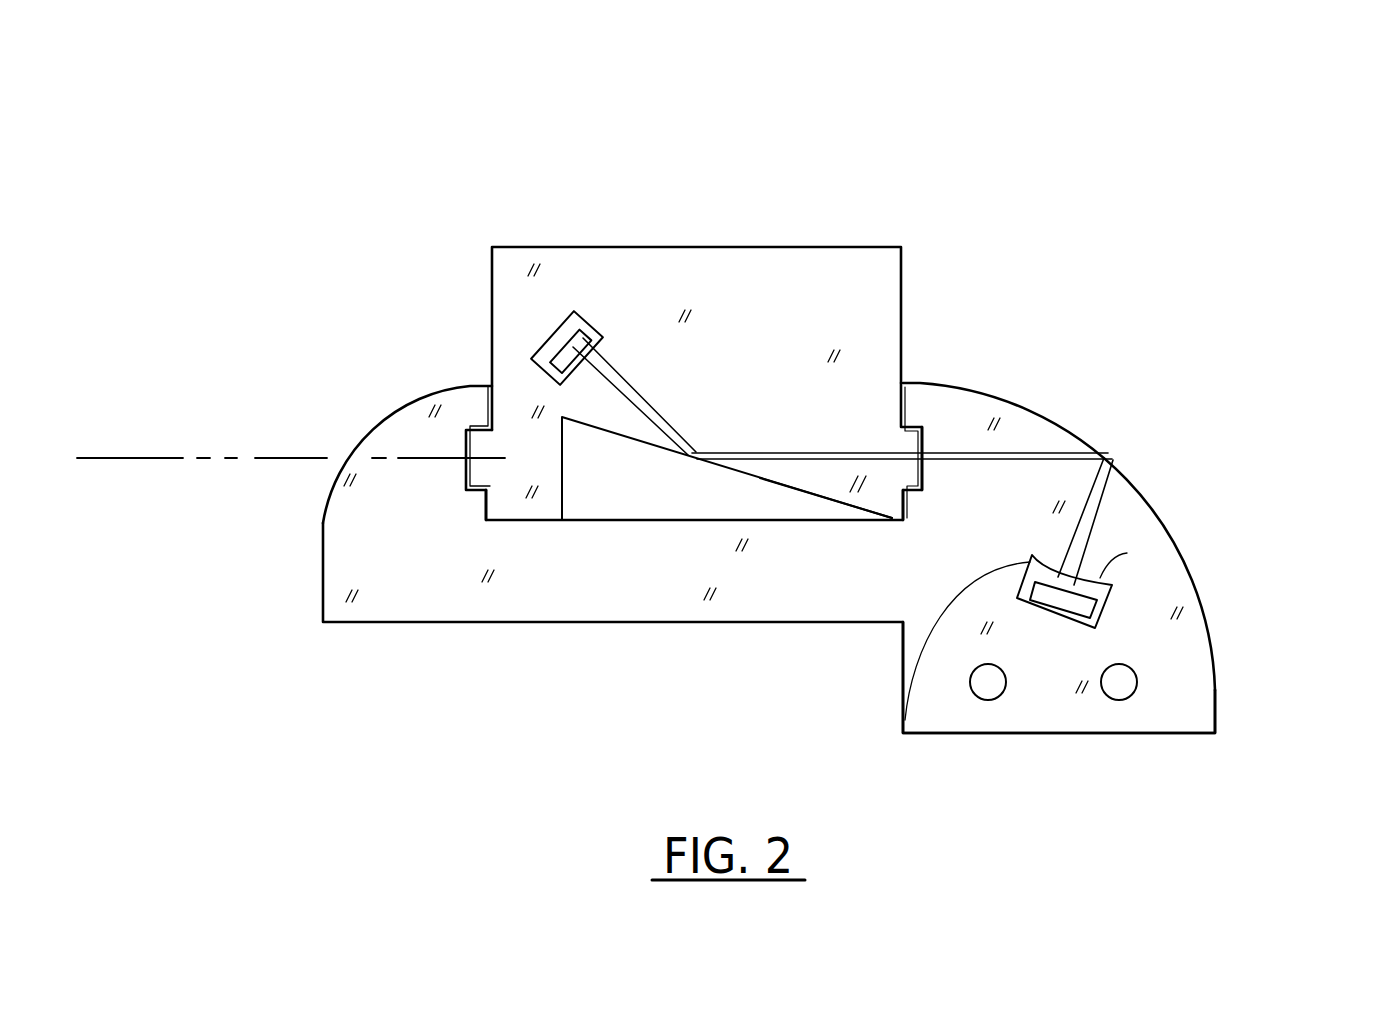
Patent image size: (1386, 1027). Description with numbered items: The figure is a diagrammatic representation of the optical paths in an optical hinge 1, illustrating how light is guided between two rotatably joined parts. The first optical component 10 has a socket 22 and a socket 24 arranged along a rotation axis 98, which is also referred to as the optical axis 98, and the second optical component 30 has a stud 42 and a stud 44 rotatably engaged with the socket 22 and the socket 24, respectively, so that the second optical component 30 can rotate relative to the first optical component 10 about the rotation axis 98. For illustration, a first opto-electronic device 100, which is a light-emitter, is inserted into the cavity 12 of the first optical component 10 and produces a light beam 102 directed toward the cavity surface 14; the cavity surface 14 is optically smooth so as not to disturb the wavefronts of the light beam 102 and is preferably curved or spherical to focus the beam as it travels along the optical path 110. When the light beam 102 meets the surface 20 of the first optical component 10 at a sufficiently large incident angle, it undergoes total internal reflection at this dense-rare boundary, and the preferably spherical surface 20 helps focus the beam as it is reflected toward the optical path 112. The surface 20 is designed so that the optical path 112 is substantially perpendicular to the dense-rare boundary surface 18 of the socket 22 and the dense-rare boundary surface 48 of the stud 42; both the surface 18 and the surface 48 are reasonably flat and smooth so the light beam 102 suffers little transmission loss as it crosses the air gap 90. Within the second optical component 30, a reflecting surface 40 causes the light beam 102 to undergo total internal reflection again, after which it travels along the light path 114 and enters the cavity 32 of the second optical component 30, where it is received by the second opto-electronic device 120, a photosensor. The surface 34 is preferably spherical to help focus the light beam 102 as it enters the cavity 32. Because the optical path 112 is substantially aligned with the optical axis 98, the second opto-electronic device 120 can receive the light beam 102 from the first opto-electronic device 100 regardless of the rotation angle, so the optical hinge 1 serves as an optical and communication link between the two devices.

The optical hinge 1 is at (1185, 172).
The first optical component 10 is at (1218, 558).
The cavity 12 is at (1100, 600).
The cavity surface 14 is at (1100, 580).
The dense-rare boundary surface 18 is at (935, 505).
The surface 20 is at (1113, 452).
The socket 22 is at (917, 413).
The socket 24 is at (473, 423).
The second optical component 30 is at (805, 260).
The cavity 32 is at (533, 355).
The surface 34 is at (603, 342).
The reflecting surface 40 is at (675, 475).
The stud 42 is at (878, 450).
The stud 44 is at (487, 478).
The dense-rare boundary surface 48 is at (872, 488).
The air gap 90 is at (927, 433).
The rotation axis 98 is at (150, 457).
The first opto-electronic device 100 is at (1070, 607).
The light beam 102 is at (887, 484).
The optical path 110 is at (1123, 513).
The optical path 112 is at (837, 448).
The light path 114 is at (668, 395).
The second opto-electronic device 120 is at (563, 308).